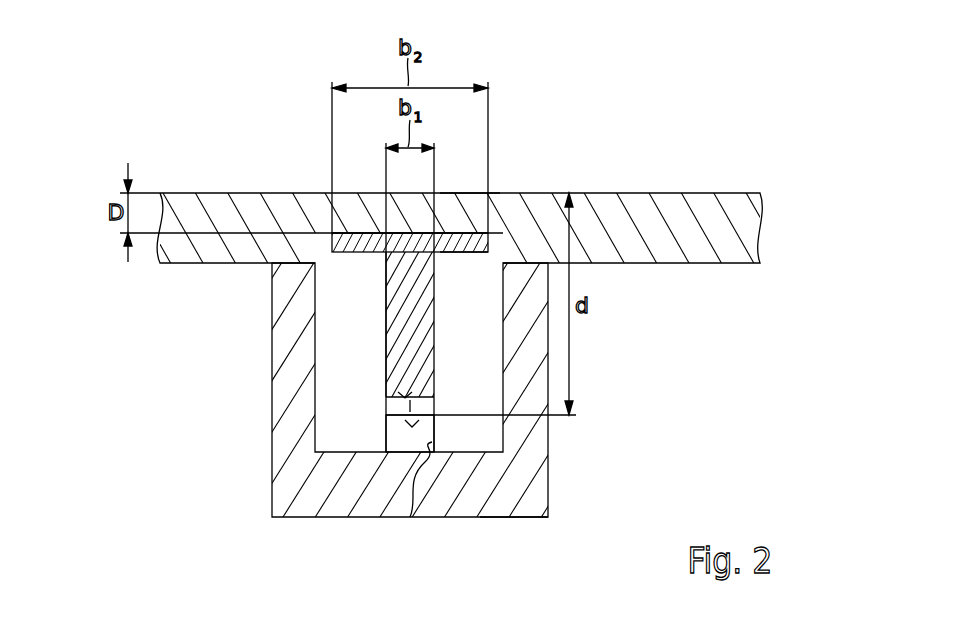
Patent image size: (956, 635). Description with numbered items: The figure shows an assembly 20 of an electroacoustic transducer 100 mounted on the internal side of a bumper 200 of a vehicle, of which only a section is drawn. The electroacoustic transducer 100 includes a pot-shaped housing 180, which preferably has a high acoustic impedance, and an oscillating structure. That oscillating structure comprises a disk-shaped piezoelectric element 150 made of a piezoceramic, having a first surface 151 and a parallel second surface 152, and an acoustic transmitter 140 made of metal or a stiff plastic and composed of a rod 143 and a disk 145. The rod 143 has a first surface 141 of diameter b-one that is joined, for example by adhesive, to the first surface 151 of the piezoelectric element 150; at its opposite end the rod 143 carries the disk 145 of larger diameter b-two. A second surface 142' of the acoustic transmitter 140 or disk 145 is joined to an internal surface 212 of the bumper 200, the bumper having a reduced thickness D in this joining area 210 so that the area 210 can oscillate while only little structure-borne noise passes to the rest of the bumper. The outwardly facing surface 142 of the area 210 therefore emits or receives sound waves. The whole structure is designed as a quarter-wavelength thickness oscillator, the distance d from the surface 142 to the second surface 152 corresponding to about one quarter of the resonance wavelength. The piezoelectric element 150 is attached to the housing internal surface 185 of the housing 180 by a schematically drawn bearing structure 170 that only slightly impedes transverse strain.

The assembly 20 is at (301, 160).
The electroacoustic transducer 100 is at (555, 472).
The acoustic transmitter 140 is at (397, 360).
The first surface of rod 141 is at (412, 407).
The outwardly facing surface 142 is at (408, 186).
The second surface of acoustic transmitter 142' is at (410, 196).
The rod 143 is at (384, 333).
The disk 145 is at (349, 238).
The piezoelectric element 150 is at (398, 405).
The first surface of piezoelectric element 151 is at (408, 396).
The second surface of piezoelectric element 152 is at (414, 422).
The bearing structure 170 is at (398, 432).
The housing 180 is at (503, 502).
The housing internal surface 185 is at (410, 517).
The bumper 200 is at (680, 210).
The joining area 210 is at (461, 212).
The internal surface of bumper 212 is at (457, 240).